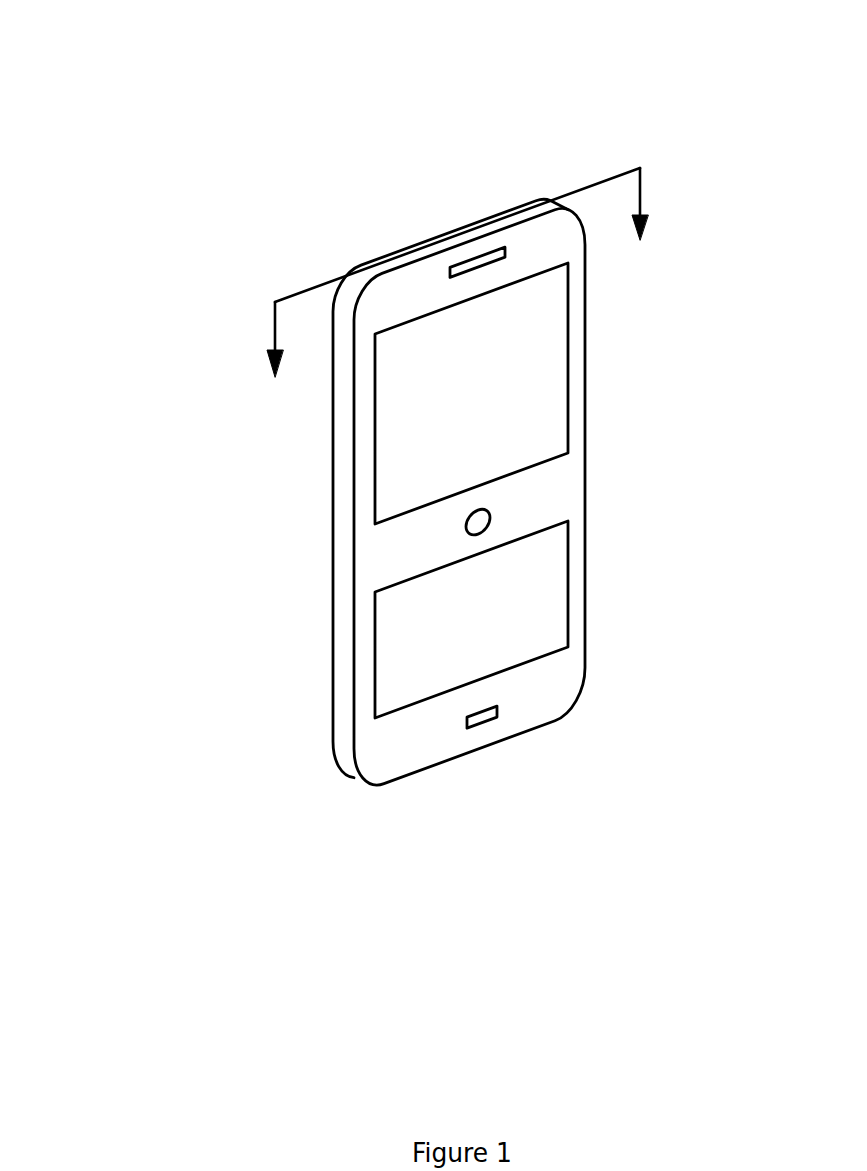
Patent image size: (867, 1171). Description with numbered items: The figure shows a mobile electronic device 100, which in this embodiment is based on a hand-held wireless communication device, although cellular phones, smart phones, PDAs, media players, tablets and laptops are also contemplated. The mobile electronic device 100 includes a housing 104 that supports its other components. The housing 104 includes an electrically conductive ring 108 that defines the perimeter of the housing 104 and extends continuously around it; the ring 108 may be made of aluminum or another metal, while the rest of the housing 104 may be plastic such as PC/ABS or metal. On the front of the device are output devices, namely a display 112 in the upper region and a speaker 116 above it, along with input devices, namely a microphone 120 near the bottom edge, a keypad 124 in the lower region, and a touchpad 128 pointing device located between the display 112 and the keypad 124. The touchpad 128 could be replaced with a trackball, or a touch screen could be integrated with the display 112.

The mobile electronic device 100 is at (148, 105).
The housing 104 is at (332, 505).
The conductive ring 108 is at (337, 668).
The display 112 is at (537, 432).
The speaker 116 is at (505, 258).
The microphone 120 is at (492, 712).
The keypad 124 is at (555, 617).
The touchpad 128 is at (490, 522).